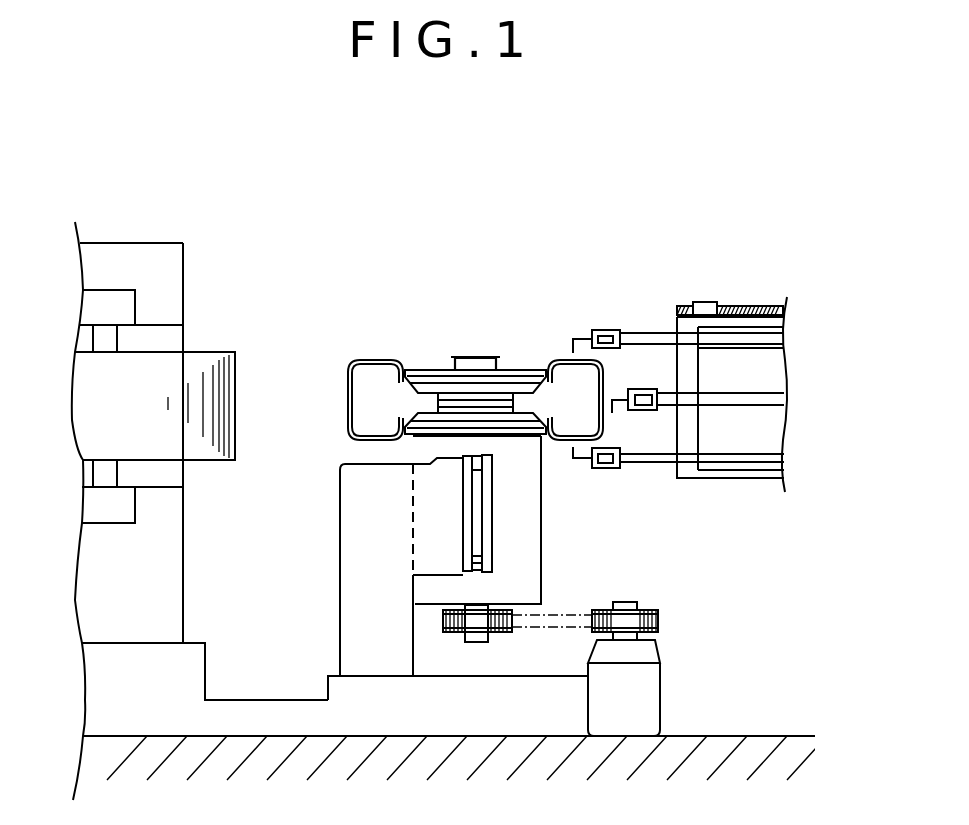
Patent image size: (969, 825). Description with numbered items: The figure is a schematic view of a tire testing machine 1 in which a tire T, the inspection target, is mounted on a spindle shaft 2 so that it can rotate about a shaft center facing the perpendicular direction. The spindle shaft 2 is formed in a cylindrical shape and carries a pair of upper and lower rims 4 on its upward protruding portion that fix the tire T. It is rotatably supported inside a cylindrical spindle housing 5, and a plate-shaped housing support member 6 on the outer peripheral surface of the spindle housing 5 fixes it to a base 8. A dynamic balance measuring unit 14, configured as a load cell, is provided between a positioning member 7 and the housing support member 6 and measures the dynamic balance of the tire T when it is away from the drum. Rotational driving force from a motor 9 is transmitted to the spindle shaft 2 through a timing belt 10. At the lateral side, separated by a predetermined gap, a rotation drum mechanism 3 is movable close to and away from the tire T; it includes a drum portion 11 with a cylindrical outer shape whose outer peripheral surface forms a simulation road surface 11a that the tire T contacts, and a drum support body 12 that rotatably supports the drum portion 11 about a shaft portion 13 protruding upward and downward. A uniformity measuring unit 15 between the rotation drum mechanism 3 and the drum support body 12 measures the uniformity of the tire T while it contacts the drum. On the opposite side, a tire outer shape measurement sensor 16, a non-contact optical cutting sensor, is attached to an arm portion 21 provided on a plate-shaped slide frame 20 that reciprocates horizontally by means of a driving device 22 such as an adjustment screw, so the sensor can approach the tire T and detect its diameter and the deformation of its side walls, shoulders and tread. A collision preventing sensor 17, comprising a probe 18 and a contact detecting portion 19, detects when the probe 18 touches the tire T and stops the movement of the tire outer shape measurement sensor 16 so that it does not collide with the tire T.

The tire testing machine 1 is at (728, 128).
The spindle shaft 2 is at (468, 295).
The rotation drum mechanism 3 is at (158, 195).
The rims 4 is at (432, 368).
The spindle housing 5 is at (427, 450).
The housing support member 6 is at (492, 560).
The positioning member 7 is at (355, 535).
The base 8 is at (262, 712).
The motor 9 is at (648, 695).
The timing belt 10 is at (563, 630).
The drum portion 11 is at (205, 365).
The simulation road surface 11a is at (236, 393).
The drum support body 12 is at (167, 580).
The shaft portion 13 is at (118, 343).
The dynamic balance measuring unit 14 is at (463, 560).
The uniformity measuring unit 15 is at (123, 290).
The tire outer shape measurement sensor 16 is at (620, 336).
The collision preventing sensor 17 is at (634, 280).
The probe 18 is at (578, 336).
The contact detecting portion 19 is at (606, 334).
The slide frame 20 is at (710, 480).
The arm portion 21 is at (762, 475).
The driving device 22 is at (757, 307).
The tire T is at (375, 358).